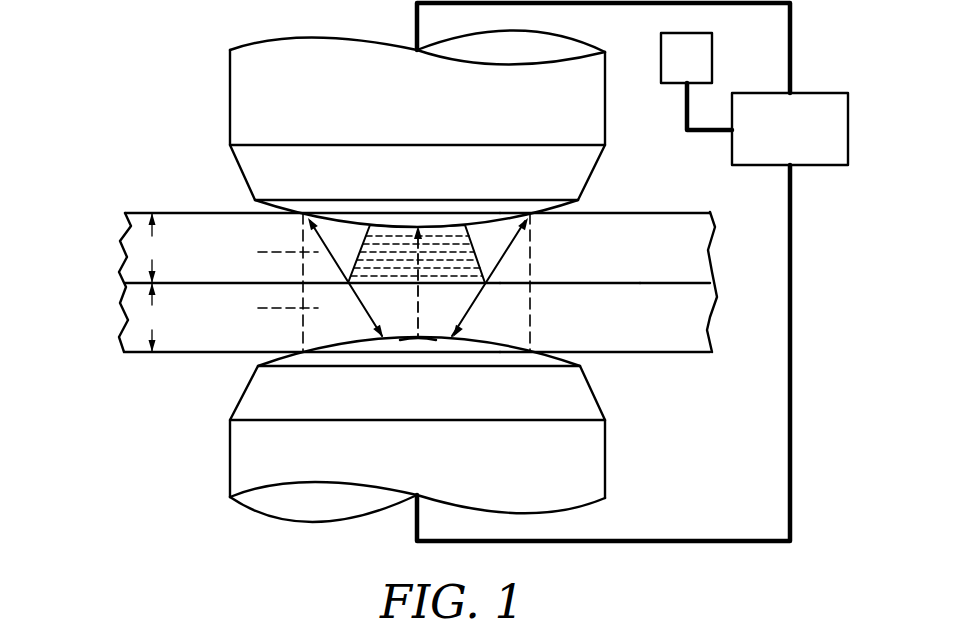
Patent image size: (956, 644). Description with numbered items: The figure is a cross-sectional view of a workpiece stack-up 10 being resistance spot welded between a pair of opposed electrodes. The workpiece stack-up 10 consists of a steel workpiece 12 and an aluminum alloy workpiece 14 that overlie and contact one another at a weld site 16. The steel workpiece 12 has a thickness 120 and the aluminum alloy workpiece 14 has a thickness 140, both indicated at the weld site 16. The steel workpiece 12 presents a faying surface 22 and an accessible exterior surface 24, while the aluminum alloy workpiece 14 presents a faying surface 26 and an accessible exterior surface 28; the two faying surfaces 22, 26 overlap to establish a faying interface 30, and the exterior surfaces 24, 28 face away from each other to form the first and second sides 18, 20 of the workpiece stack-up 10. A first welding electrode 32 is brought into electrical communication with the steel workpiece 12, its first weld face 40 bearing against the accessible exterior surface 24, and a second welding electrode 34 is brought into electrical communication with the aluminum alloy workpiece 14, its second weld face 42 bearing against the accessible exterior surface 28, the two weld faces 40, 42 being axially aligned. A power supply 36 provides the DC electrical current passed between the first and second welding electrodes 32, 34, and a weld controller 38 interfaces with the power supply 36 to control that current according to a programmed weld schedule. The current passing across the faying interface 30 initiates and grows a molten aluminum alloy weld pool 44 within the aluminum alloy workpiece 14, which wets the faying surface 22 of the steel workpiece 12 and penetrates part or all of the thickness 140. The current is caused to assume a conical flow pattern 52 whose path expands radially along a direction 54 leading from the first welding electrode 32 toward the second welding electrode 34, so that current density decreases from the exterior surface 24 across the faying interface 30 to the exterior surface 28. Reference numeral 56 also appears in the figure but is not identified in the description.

The workpiece stack-up 10 is at (403, 287).
The steel workpiece 12 is at (447, 355).
The aluminum alloy workpiece 14 is at (447, 197).
The weld site 16 is at (530, 300).
The first side 18 is at (228, 360).
The second side 20 is at (228, 204).
The faying surface of steel workpiece 22 is at (653, 276).
The accessible exterior surface of steel workpiece 24 is at (648, 353).
The faying surface of aluminum alloy workpiece 26 is at (640, 283).
The accessible exterior surface of aluminum alloy workpiece 28 is at (647, 212).
The faying interface 30 is at (501, 292).
The first welding electrode 32 is at (417, 404).
The second welding electrode 34 is at (417, 134).
The power supply 36 is at (777, 143).
The weld controller 38 is at (674, 71).
The first weld face 40 is at (358, 337).
The second weld face 42 is at (480, 238).
The molten aluminum alloy weld pool 44 is at (362, 262).
The conical flow pattern 52 is at (510, 252).
The direction 54 is at (420, 298).
The weld zone 56 is at (256, 308).
The thickness of aluminum alloy workpiece 140 is at (131, 261).
The thickness of steel workpiece 120 is at (131, 332).